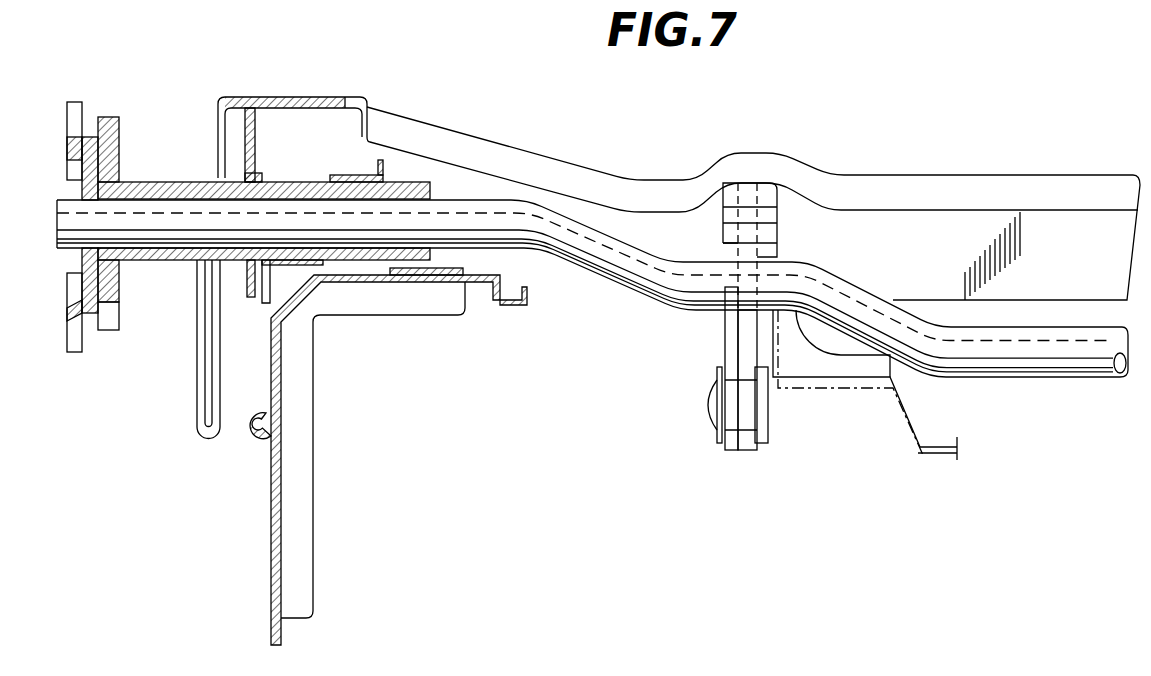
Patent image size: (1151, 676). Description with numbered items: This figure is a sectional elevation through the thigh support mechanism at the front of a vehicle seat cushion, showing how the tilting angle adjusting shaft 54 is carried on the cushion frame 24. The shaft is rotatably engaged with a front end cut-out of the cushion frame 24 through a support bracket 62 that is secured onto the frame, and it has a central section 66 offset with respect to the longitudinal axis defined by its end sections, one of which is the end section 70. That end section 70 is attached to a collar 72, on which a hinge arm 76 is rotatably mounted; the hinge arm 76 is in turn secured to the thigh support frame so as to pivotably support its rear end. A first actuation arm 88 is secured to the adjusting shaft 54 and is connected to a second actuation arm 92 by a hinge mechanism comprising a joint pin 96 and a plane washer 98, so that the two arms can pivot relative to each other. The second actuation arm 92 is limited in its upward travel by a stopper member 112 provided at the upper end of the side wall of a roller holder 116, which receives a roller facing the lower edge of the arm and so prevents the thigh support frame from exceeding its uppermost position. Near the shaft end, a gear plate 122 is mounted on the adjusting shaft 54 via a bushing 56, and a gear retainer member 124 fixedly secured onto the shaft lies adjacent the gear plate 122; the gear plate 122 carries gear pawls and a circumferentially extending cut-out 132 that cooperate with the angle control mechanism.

The cushion frame 24 is at (297, 413).
The tilting angle adjusting shaft 54 is at (597, 233).
The bushing 56 is at (162, 187).
The support bracket 62 is at (355, 177).
The central section 66 is at (1048, 363).
The end section 70 is at (337, 213).
The collar 72 is at (260, 173).
The hinge arm 76 is at (283, 100).
The first actuation arm 88 is at (730, 345).
The second actuation arm 92 is at (750, 408).
The joint pin 96 is at (712, 410).
The plane washer 98 is at (768, 435).
The stopper member 112 is at (757, 217).
The roller holder 116 is at (803, 360).
The gear plate 122 is at (118, 127).
The gear retainer member 124 is at (82, 160).
The cut-out 132 is at (115, 313).